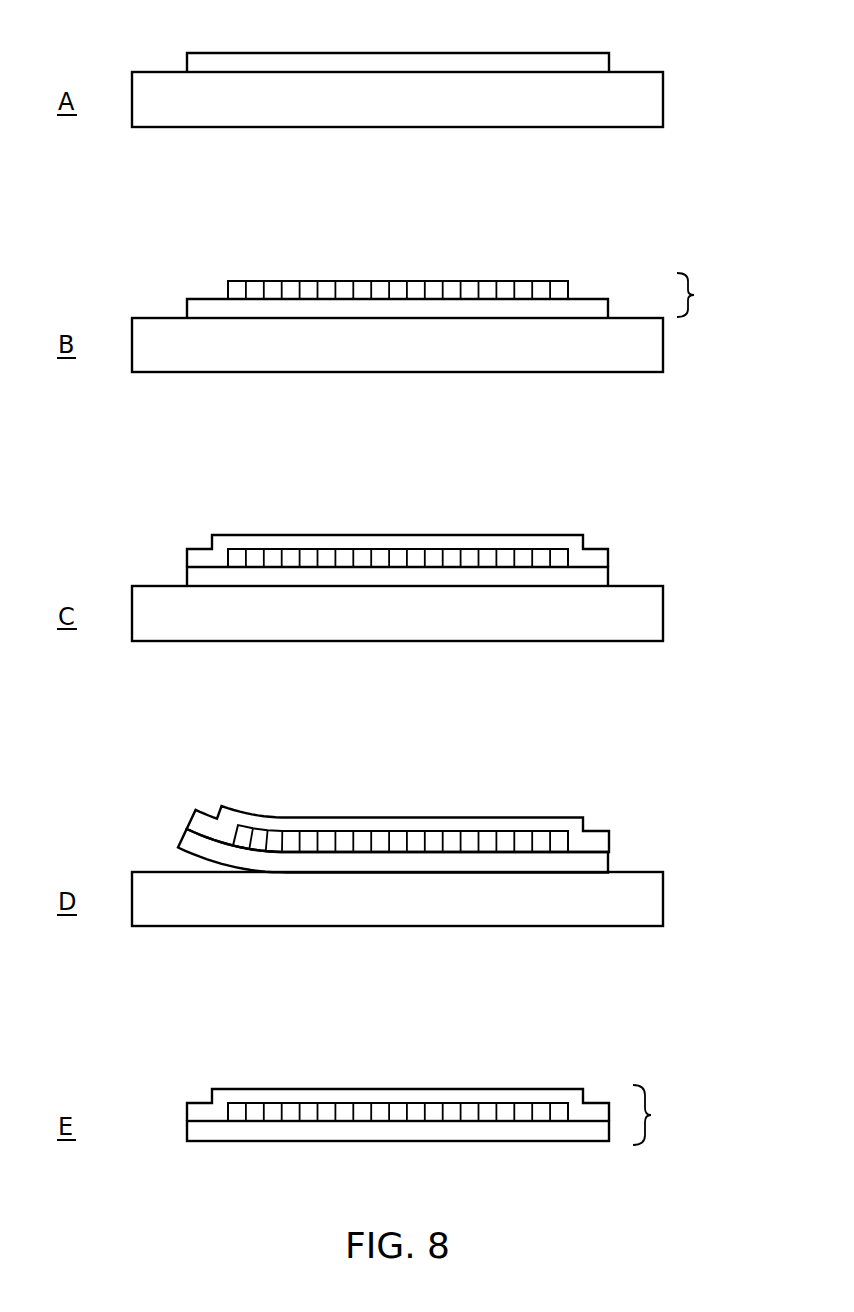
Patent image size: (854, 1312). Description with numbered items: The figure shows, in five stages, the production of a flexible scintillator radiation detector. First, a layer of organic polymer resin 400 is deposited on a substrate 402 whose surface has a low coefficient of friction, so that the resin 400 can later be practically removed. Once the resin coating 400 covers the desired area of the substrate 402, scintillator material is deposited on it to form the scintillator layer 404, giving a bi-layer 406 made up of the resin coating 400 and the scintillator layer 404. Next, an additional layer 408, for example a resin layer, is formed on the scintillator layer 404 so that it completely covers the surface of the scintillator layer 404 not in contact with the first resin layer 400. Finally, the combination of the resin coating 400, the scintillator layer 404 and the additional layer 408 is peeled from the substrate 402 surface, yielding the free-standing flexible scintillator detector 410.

In FIG. 8A, the organic polymer resin layer 400 is at (596, 58).
In FIG. 8B, the organic polymer resin layer 400 is at (596, 301).
In FIG. 8C, the organic polymer resin layer 400 is at (607, 578).
In FIG. 8D, the organic polymer resin layer 400 is at (608, 862).
In FIG. 8E, the organic polymer resin layer 400 is at (581, 1138).
In FIG. 8A, the substrate 402 is at (660, 100).
In FIG. 8B, the substrate 402 is at (660, 348).
In FIG. 8C, the substrate 402 is at (660, 614).
In FIG. 8D, the substrate 402 is at (660, 899).
In FIG. 8B, the scintillator layer 404 is at (525, 281).
In FIG. 8C, the scintillator layer 404 is at (543, 548).
In FIG. 8D, the scintillator layer 404 is at (543, 830).
In FIG. 8E, the scintillator layer 404 is at (543, 1102).
In FIG. 8B, the bi-layer 406 is at (694, 295).
In FIG. 8C, the additional layer 408 is at (465, 534).
In FIG. 8D, the additional layer 408 is at (465, 816).
In FIG. 8E, the additional layer 408 is at (465, 1088).
In FIG. 8E, the flexible scintillator detector 410 is at (651, 1115).